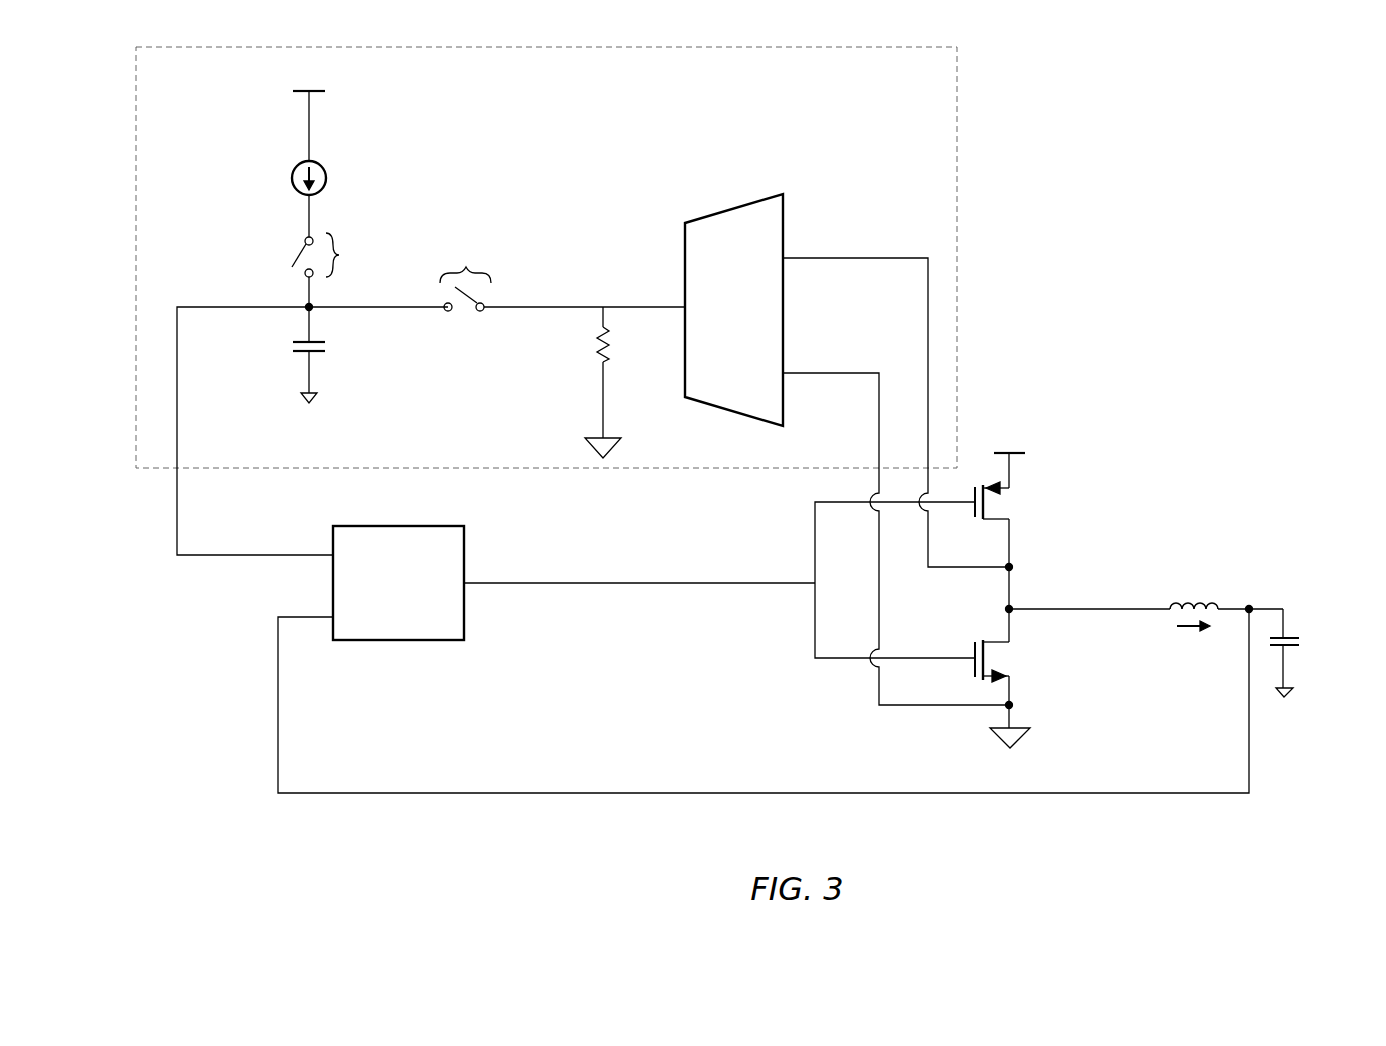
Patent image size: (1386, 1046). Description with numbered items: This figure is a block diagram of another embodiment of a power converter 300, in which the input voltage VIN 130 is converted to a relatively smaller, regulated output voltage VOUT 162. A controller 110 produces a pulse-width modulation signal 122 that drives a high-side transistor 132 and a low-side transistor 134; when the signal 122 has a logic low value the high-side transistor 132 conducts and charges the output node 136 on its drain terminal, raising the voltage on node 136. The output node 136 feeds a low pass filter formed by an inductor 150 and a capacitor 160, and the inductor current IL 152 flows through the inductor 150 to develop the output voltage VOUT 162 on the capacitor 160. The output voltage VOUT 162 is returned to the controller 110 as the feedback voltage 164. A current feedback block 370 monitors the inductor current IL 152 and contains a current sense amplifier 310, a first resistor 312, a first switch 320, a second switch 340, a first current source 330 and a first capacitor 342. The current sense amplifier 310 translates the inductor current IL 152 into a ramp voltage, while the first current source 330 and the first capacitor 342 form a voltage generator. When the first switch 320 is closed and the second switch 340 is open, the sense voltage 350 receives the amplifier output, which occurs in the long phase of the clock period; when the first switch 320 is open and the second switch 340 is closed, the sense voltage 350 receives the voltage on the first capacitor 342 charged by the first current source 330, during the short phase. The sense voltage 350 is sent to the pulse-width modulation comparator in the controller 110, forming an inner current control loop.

The power converter 300 is at (1129, 115).
The current feedback block 370 is at (546, 257).
The input voltage VIN 130 is at (667, 276).
The current source I1 330 is at (322, 167).
The switch S2 340 is at (345, 257).
The sense voltage 350 is at (247, 305).
The capacitor C1 342 is at (285, 388).
The switch S1 320 is at (466, 262).
The resistor R1 312 is at (600, 359).
The current sense amplifier 310 is at (734, 310).
The controller 110 is at (398, 583).
The pulse-width modulation (PWM) signal 122 is at (762, 582).
The high-side transistor 132 is at (985, 493).
The low-side transistor 134 is at (1008, 638).
The output node 136 is at (1117, 607).
The inductor 150 is at (1180, 600).
The inductor current IL 152 is at (1189, 640).
The output voltage VOUT 162 is at (1281, 606).
The capacitor 160 is at (1320, 680).
The feedback voltage 164 is at (278, 665).